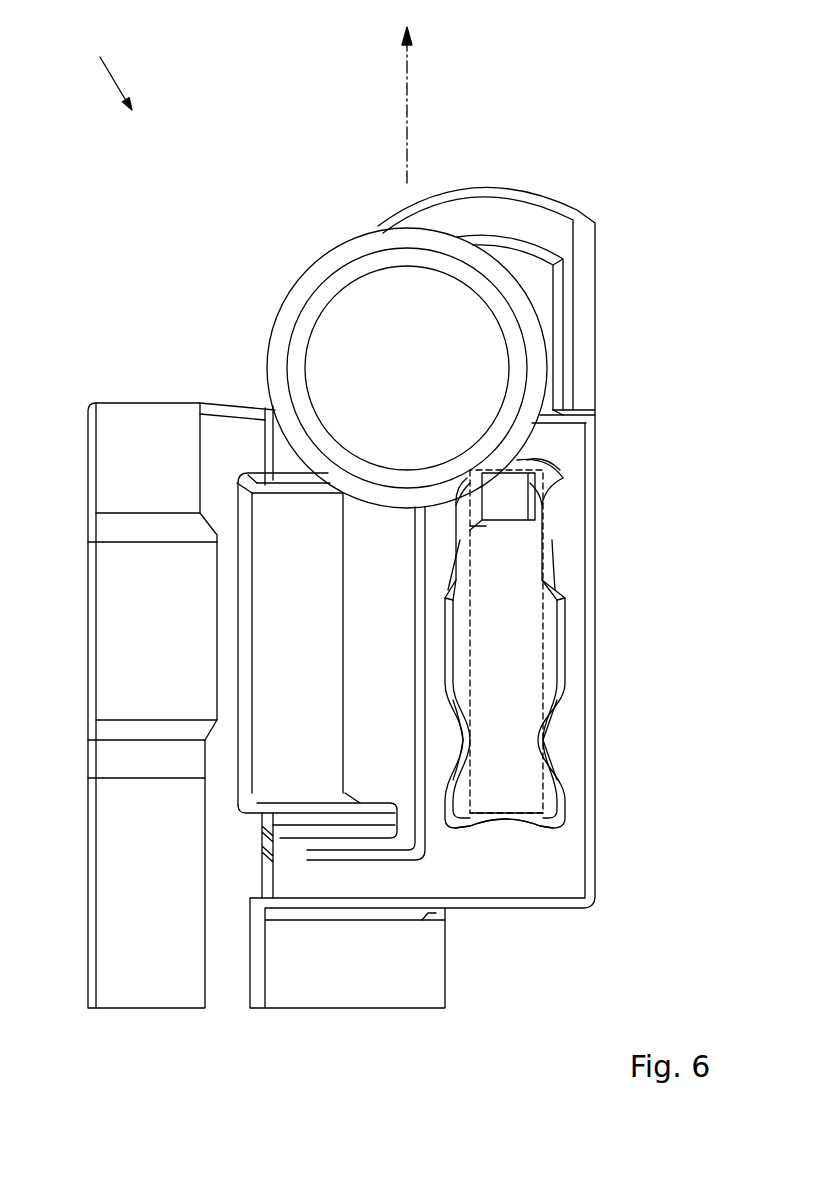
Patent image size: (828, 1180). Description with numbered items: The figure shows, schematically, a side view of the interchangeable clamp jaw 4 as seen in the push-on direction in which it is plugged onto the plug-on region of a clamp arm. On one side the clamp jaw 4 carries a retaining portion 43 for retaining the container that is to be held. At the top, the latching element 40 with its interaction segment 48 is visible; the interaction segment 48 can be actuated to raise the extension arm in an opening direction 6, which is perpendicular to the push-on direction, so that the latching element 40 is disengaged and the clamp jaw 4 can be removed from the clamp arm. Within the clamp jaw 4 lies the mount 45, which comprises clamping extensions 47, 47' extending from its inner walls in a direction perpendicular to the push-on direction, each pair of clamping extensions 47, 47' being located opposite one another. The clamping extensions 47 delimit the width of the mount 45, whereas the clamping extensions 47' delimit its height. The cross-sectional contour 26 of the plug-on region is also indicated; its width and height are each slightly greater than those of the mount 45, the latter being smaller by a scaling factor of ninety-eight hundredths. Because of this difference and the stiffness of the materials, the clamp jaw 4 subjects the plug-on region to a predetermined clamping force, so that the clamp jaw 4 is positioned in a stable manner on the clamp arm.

The clamp jaw 4 is at (106, 68).
The opening direction 6 is at (407, 125).
The interaction segment 48 is at (375, 308).
The retaining portion 43 is at (133, 640).
The cross-sectional contour 26 is at (547, 617).
The mount 45 is at (512, 665).
The latching element 40 is at (512, 495).
The clamping extensions 47 is at (565, 641).
The clamping extensions 47' is at (575, 650).